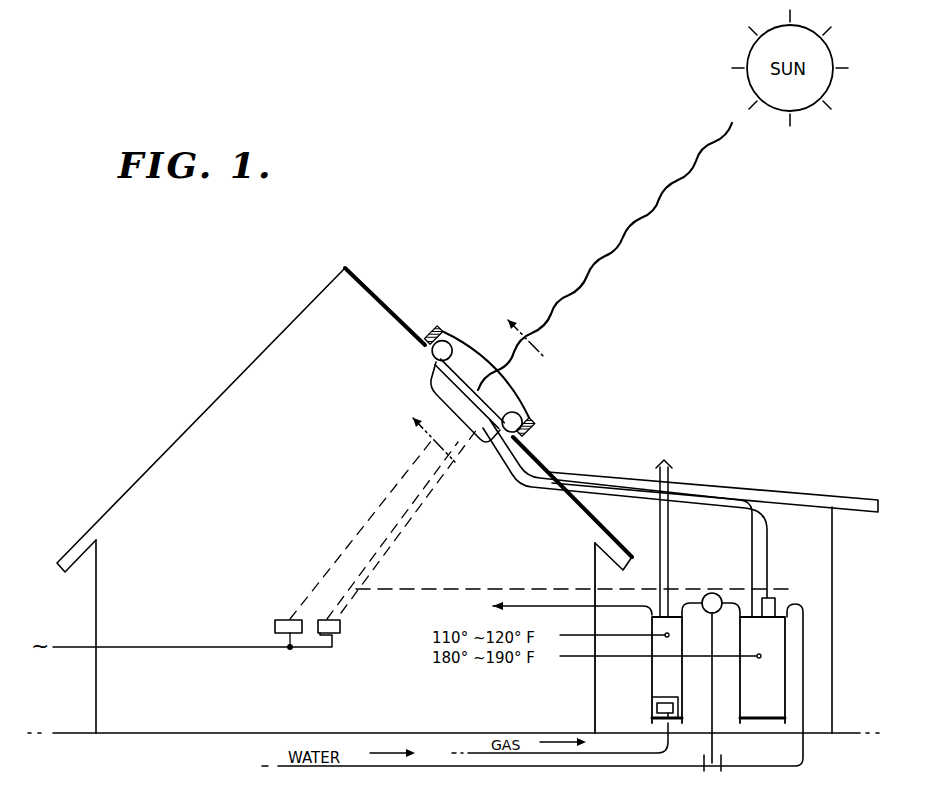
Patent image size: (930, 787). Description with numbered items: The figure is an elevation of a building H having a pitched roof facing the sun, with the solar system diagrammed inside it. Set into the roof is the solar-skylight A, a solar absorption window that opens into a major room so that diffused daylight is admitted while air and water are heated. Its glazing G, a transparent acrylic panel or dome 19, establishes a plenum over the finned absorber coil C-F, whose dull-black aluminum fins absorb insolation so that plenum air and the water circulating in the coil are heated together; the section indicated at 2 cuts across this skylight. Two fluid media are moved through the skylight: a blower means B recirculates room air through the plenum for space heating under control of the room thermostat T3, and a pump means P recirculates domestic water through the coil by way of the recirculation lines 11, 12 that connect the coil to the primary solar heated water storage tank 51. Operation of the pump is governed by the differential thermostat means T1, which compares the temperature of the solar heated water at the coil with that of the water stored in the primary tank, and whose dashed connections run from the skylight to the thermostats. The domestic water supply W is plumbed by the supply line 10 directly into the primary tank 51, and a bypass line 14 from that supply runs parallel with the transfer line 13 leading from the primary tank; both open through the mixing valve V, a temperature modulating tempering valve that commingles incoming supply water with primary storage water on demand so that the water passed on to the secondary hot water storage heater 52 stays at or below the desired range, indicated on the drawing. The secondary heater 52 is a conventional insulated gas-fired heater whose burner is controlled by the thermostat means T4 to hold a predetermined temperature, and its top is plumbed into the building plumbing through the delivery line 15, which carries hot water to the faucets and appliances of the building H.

The building H is at (220, 413).
The solar-skylight A is at (528, 364).
The blower means B is at (528, 409).
The glazing G is at (483, 353).
The finned labyrinth coil C-F is at (463, 372).
The dome 19 is at (484, 386).
The section line 2- 2 is at (482, 401).
The recirculation line 11 is at (714, 498).
The recirculation line 12 is at (600, 494).
The transfer line 13 is at (728, 601).
The bypass line 14 is at (720, 743).
The delivery line 15 is at (546, 606).
The primary solar heated water storage tank 51 is at (655, 678).
The hot water storage heater 52 is at (791, 676).
The differential thermostat means T1 is at (344, 626).
The selective temperature level thermostat T3 is at (274, 623).
The thermostat means T4 is at (656, 707).
The mixing valve V is at (712, 592).
The pump means P is at (777, 592).
The domestic water supply W is at (291, 766).
The supply line 10 is at (585, 772).